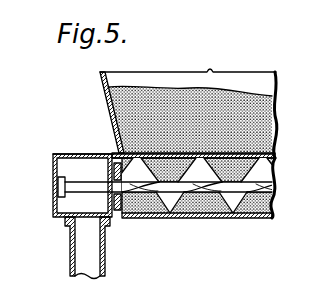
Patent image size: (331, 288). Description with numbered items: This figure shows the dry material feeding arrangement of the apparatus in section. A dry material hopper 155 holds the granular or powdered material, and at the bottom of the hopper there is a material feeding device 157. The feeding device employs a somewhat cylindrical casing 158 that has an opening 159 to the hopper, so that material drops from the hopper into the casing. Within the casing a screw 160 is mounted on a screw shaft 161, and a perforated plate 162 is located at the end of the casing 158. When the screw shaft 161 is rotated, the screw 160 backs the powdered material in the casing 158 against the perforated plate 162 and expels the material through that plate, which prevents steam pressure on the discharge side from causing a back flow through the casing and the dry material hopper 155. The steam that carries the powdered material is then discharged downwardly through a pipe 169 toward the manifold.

The dry material hopper 155 is at (245, 88).
The material feeding device 157 is at (206, 218).
The cylindrical casing 158 is at (228, 216).
The opening 159 is at (253, 219).
The screw 160 is at (171, 216).
The screw shaft 161 is at (92, 184).
The perforated plate 162 is at (115, 214).
The pipe 169 is at (70, 249).